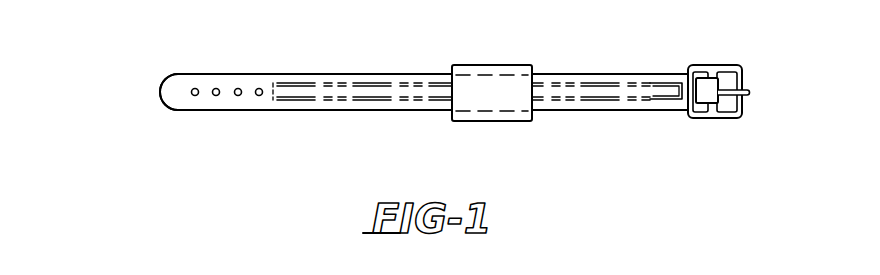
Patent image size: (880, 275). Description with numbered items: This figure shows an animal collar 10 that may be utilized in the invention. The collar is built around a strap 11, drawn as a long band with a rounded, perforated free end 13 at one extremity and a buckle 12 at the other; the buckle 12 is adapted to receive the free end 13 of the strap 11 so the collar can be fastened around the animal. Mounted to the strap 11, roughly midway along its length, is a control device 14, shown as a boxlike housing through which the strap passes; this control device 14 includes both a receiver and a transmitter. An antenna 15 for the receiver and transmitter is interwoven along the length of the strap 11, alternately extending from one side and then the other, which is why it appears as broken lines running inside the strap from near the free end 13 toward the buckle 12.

The animal collar 10 is at (540, 47).
The strap 11 is at (623, 110).
The buckle 12 is at (728, 118).
The free end 13 is at (223, 110).
The control device 14 is at (510, 122).
The antenna 15 is at (311, 84).